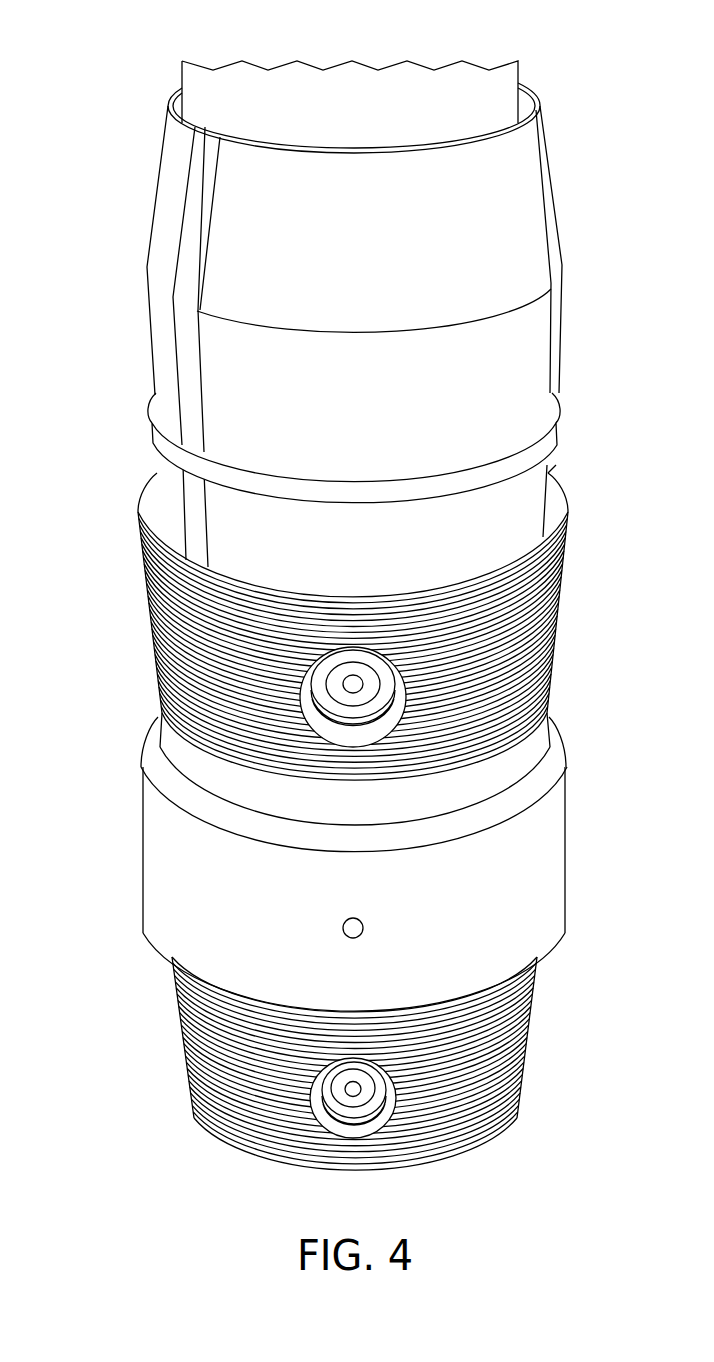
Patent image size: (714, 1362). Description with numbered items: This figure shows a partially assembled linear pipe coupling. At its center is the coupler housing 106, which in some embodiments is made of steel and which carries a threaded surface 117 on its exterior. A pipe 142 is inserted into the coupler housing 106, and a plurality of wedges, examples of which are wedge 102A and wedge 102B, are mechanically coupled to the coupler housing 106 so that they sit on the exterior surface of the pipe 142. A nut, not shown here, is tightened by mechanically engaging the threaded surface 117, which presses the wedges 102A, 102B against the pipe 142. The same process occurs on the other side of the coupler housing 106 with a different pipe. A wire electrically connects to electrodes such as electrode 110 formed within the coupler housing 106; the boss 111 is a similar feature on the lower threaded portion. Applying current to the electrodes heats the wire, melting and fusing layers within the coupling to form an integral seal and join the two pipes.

The pipe 142 is at (232, 72).
The wedge 102A is at (158, 203).
The wedge 102B is at (525, 208).
The threaded surface 117 is at (555, 605).
The electrode 110 is at (351, 675).
The coupler housing 106 is at (163, 868).
The lower boss 111 is at (353, 1092).